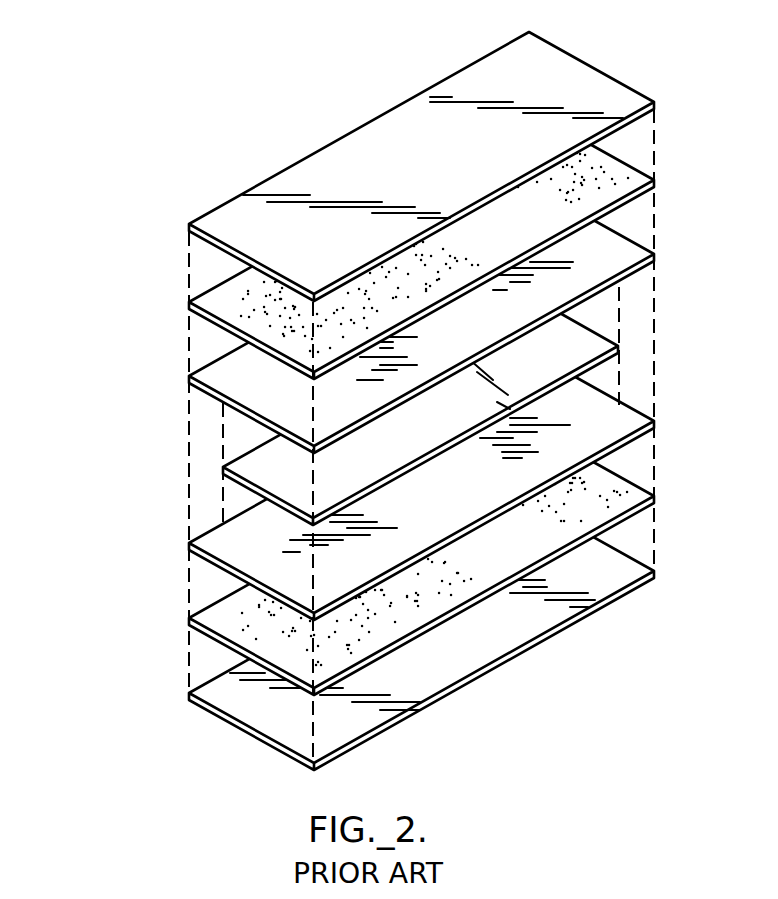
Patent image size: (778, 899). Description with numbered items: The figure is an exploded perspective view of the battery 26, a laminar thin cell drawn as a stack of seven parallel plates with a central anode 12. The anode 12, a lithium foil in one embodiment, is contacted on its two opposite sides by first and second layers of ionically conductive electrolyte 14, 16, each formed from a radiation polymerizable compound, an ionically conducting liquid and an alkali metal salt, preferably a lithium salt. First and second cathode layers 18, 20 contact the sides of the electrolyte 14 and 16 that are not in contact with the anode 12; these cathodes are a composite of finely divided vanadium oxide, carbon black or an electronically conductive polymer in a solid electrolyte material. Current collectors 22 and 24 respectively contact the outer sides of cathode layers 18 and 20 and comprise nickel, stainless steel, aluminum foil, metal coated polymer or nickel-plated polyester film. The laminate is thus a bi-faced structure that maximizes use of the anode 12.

The battery 26 is at (92, 252).
The current collector 22 is at (421, 151).
The first cathode layer 18 is at (617, 167).
The first electrolyte layer 14 is at (625, 235).
The anode 12 is at (597, 330).
The second electrolyte layer 16 is at (627, 403).
The second cathode layer 20 is at (627, 478).
The current collector 24 is at (620, 548).